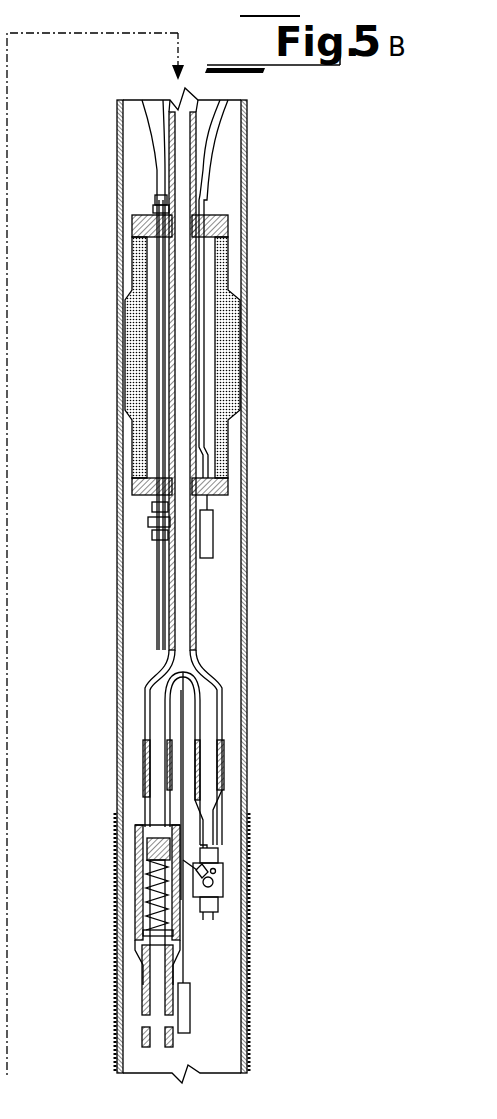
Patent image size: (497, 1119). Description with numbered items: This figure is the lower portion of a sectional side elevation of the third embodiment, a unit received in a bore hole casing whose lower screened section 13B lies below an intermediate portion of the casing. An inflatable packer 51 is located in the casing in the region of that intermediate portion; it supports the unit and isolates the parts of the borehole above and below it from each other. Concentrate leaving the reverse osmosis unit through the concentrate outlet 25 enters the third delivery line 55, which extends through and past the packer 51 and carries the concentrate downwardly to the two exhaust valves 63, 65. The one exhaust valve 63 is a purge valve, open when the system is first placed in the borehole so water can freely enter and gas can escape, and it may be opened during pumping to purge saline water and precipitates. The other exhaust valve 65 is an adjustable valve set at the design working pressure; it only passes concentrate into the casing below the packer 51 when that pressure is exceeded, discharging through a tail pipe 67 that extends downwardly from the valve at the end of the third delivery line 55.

The screened section 13B is at (118, 960).
The concentrate outlet 25 is at (193, 128).
The inflatable packer 51 is at (226, 343).
The third delivery line 55 is at (187, 523).
The exhaust valve 63 is at (213, 870).
The exhaust valve 65 is at (166, 940).
The tail pipe 67 is at (143, 1027).